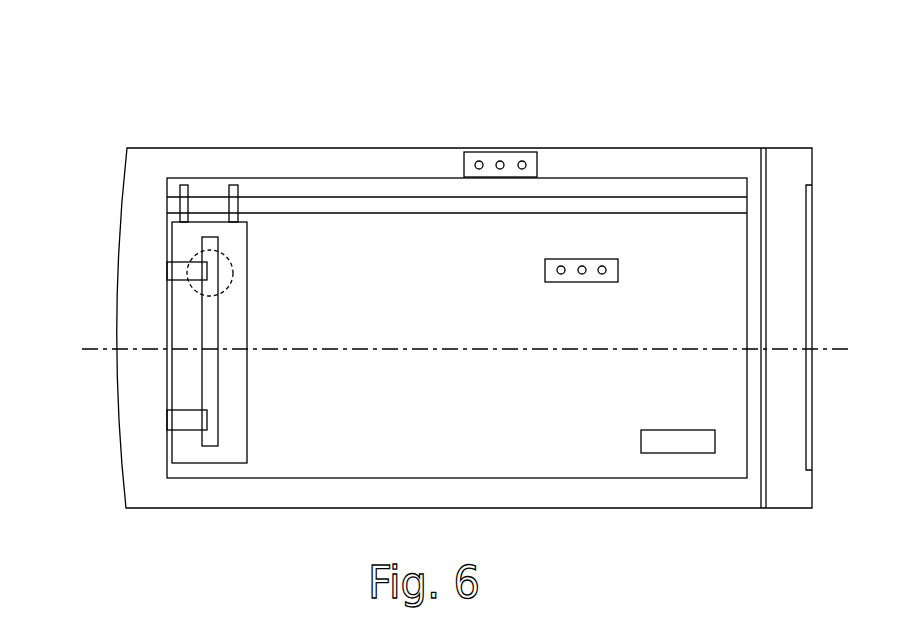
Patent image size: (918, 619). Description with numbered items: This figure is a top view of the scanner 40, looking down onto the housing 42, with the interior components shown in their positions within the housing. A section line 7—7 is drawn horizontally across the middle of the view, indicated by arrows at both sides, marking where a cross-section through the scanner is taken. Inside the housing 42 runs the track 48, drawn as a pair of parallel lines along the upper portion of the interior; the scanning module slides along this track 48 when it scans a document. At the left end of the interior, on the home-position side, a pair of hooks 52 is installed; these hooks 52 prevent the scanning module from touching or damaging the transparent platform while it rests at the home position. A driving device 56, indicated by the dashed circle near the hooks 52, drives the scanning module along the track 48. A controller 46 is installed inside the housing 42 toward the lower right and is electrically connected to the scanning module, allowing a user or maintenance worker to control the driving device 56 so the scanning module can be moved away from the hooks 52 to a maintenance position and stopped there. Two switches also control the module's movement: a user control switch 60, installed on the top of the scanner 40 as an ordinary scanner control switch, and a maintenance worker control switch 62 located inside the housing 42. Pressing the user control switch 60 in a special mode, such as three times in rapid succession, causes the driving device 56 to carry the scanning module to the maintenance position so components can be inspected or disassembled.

The scanner 40 is at (437, 299).
The housing 42 is at (293, 165).
The controller 46 is at (667, 440).
The track 48 is at (663, 203).
The hooks 52 is at (167, 267).
The driving device 56 is at (233, 283).
The user control switch 60 is at (518, 152).
The maintenance worker control switch 62 is at (592, 262).
The line 7— 7 is at (95, 349).